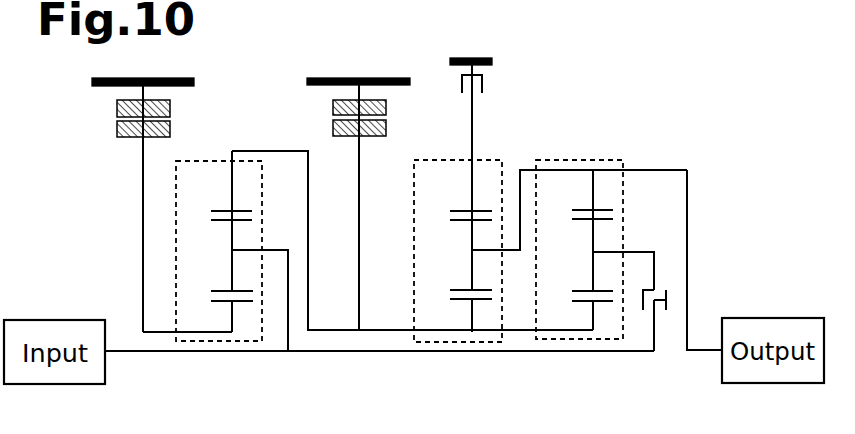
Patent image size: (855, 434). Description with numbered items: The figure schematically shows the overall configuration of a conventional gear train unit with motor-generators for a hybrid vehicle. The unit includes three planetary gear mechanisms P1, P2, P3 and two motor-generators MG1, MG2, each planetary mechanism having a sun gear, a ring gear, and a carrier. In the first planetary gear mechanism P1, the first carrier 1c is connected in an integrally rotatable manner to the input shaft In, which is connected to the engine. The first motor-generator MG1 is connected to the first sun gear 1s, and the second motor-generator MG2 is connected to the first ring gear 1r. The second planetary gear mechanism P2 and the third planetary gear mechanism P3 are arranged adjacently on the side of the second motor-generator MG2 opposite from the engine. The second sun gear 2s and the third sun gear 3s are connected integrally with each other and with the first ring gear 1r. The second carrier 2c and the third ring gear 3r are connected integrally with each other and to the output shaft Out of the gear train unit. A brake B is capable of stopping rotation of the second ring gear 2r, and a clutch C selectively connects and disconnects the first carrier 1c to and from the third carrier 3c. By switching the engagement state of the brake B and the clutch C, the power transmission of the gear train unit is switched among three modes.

The first motor-generator MG1 is at (131, 205).
The second motor-generator MG2 is at (345, 204).
The first planetary gear mechanism P1 is at (203, 160).
The second planetary gear mechanism P2 is at (432, 160).
The third planetary gear mechanism P3 is at (574, 160).
The first ring gear 1r is at (232, 190).
The first carrier 1c is at (232, 272).
The first sun gear 1s is at (232, 318).
The second ring gear 2r is at (472, 190).
The second carrier 2c is at (472, 270).
The second sun gear 2s is at (472, 316).
The third ring gear 3r is at (593, 190).
The third carrier 3c is at (593, 268).
The third sun gear 3s is at (593, 318).
The brake B is at (483, 86).
The clutch C is at (670, 292).
The input shaft In is at (330, 352).
The output shaft Out is at (702, 352).